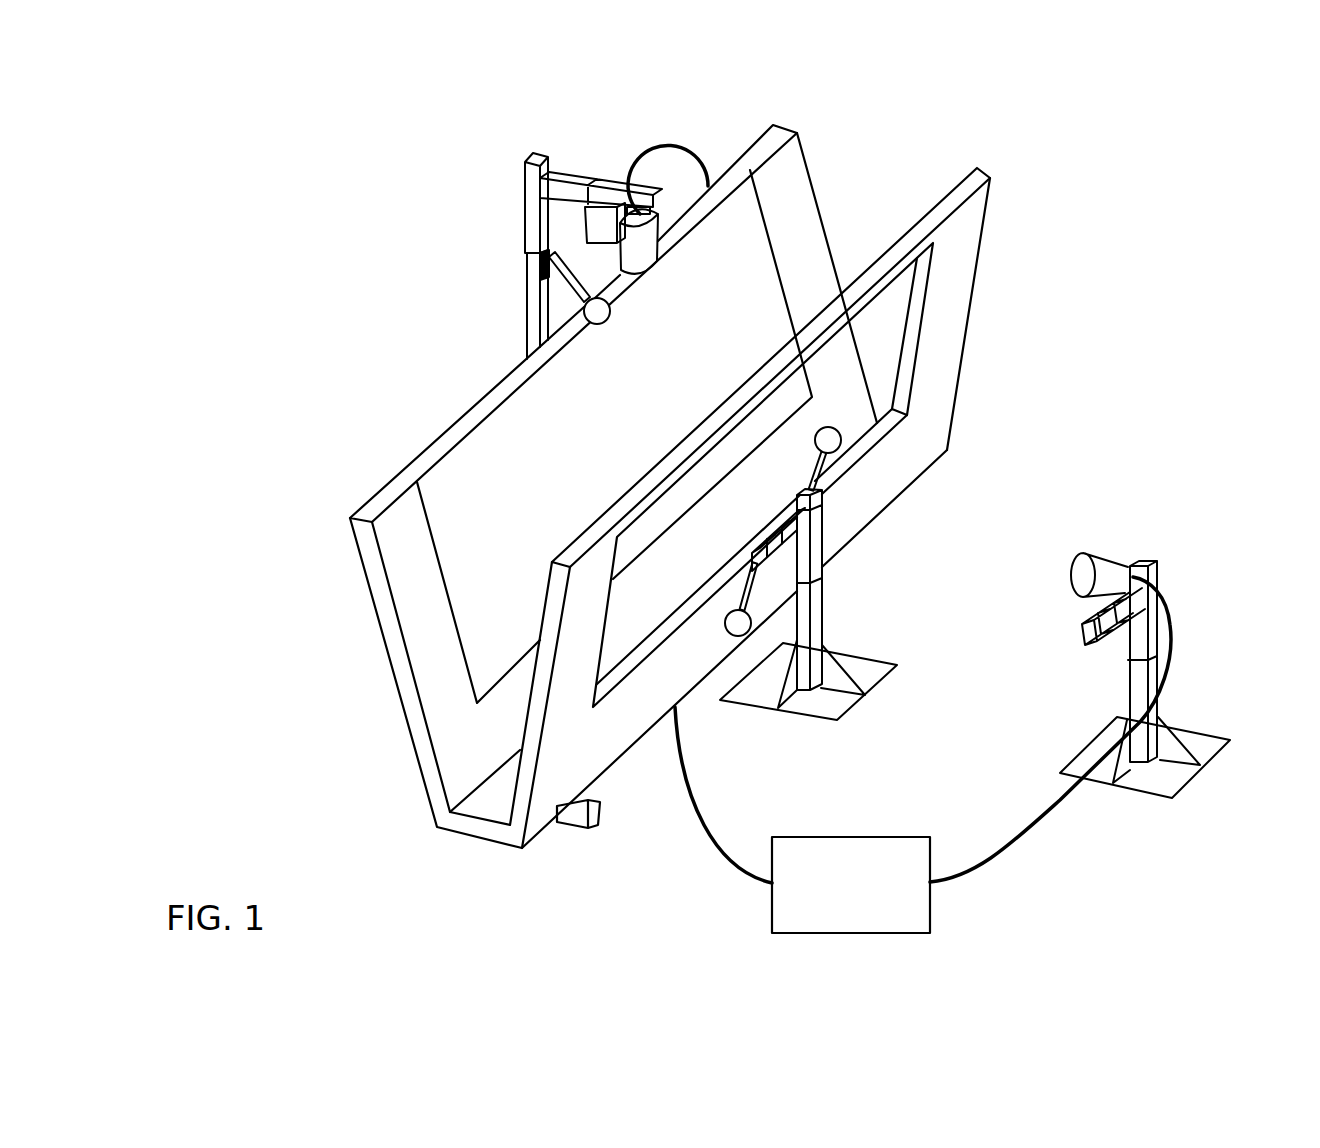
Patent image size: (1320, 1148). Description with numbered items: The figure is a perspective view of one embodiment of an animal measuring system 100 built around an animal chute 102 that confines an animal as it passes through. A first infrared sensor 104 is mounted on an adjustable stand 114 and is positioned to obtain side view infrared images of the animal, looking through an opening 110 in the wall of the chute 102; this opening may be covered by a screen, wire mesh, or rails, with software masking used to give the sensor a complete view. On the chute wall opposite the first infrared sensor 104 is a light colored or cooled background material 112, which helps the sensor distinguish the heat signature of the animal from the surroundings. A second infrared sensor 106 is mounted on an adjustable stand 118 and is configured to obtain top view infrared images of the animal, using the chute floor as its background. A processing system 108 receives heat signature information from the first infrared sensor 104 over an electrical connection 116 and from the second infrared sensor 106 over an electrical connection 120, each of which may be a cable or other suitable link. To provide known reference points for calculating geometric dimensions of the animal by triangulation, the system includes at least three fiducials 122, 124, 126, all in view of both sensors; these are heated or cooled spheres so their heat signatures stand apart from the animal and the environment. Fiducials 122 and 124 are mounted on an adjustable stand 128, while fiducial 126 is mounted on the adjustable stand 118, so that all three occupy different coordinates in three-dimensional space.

The animal measuring system 100 is at (1172, 215).
The animal chute 102 is at (967, 262).
The first infrared sensor 104 is at (1115, 568).
The second infrared sensor 106 is at (633, 252).
The processing system 108 is at (907, 840).
The opening 110 is at (875, 364).
The background material 112 is at (447, 477).
The adjustable stand 114 is at (1135, 655).
The electrical connection 116 is at (1022, 845).
The adjustable stand 118 is at (567, 180).
The electrical connection 120 is at (678, 143).
The fiducial 122 is at (740, 632).
The fiducial 124 is at (835, 443).
The fiducial 126 is at (597, 311).
The adjustable stand 128 is at (817, 613).